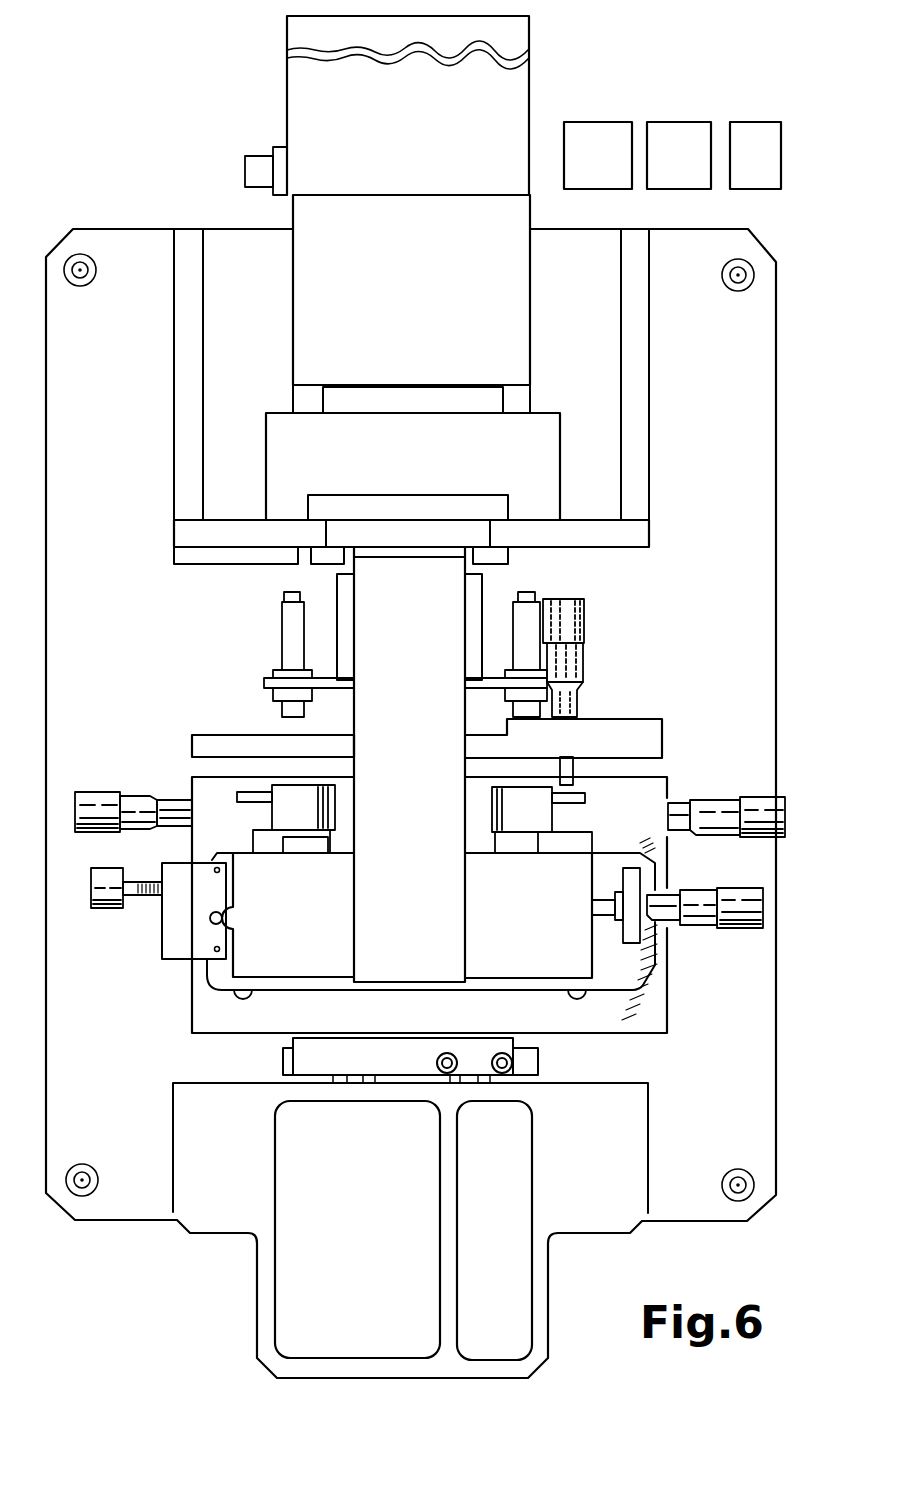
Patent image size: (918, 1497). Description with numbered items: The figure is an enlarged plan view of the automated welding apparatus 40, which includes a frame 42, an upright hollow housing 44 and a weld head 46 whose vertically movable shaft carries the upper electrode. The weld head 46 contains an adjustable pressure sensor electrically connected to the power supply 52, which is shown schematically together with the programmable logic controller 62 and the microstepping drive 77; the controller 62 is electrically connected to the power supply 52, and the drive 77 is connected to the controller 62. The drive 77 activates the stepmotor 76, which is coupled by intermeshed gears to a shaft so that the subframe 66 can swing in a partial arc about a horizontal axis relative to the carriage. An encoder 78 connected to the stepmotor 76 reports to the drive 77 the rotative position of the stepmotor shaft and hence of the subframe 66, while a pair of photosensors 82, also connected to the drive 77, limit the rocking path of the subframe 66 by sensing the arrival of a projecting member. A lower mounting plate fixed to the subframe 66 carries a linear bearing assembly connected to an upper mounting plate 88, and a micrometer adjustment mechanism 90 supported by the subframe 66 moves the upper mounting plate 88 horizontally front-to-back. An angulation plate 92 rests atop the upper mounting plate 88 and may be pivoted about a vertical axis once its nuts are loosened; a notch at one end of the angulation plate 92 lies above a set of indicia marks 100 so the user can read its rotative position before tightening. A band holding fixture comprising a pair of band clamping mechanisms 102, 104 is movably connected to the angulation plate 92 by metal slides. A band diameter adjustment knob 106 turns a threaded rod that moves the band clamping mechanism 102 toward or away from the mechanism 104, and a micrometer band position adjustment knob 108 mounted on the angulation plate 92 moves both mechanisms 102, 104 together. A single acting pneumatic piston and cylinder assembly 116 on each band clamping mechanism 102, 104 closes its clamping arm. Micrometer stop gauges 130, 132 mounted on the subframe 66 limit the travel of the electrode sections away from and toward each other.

The automated welding apparatus 40 is at (786, 298).
The frame 42 is at (768, 1120).
The upright hollow housing 44 is at (181, 350).
The weld head 46 is at (420, 640).
The power supply 52 is at (596, 128).
The programmable logic controller 62 is at (676, 130).
The subframe 66 is at (199, 735).
The stepmotor 76 is at (303, 225).
The microstepping drive 77 is at (759, 128).
The encoder 78 is at (287, 38).
The photosensors 82 is at (286, 617).
The upper mounting plate 88 is at (198, 1023).
The micrometer adjustment mechanism 90 is at (586, 620).
The angulation plate 92 is at (215, 972).
The indicia marks 100 is at (645, 1018).
The band clamping mechanism 102 is at (291, 965).
The band clamping mechanism 104 is at (525, 968).
The band diameter adjustment knob 106 is at (103, 910).
The micrometer band position adjustment knob 108 is at (739, 930).
The single acting pneumatic piston and cylinder assembly 116 is at (470, 812).
The micrometer stop gauge 130 is at (101, 793).
The micrometer stop gauge 132 is at (745, 797).